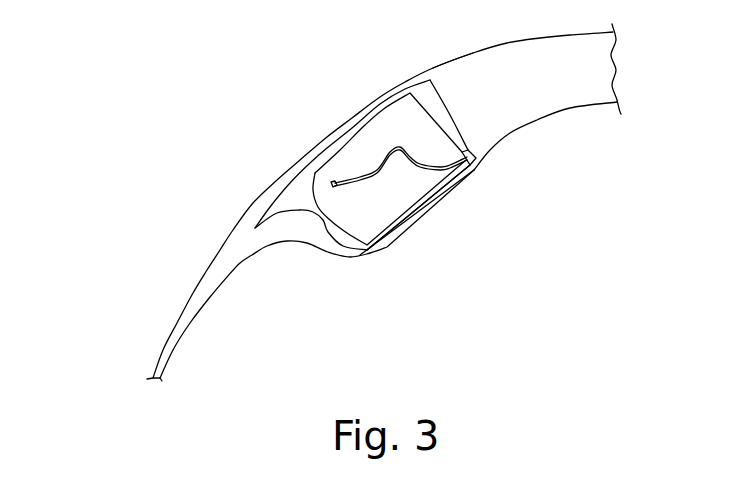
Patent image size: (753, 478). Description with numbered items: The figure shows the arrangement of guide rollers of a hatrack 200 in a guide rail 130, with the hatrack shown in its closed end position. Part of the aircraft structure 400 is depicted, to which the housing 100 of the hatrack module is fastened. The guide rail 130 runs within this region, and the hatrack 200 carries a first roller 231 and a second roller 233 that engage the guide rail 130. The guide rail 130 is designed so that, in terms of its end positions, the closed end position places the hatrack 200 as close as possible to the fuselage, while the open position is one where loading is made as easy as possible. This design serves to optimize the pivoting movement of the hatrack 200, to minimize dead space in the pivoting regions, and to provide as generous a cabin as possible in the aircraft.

The housing 100 is at (455, 90).
The guide rail 130 is at (474, 170).
The hatrack 200 is at (440, 219).
The first roller 231 is at (335, 185).
The second roller 233 is at (402, 148).
The structure 400 is at (163, 283).